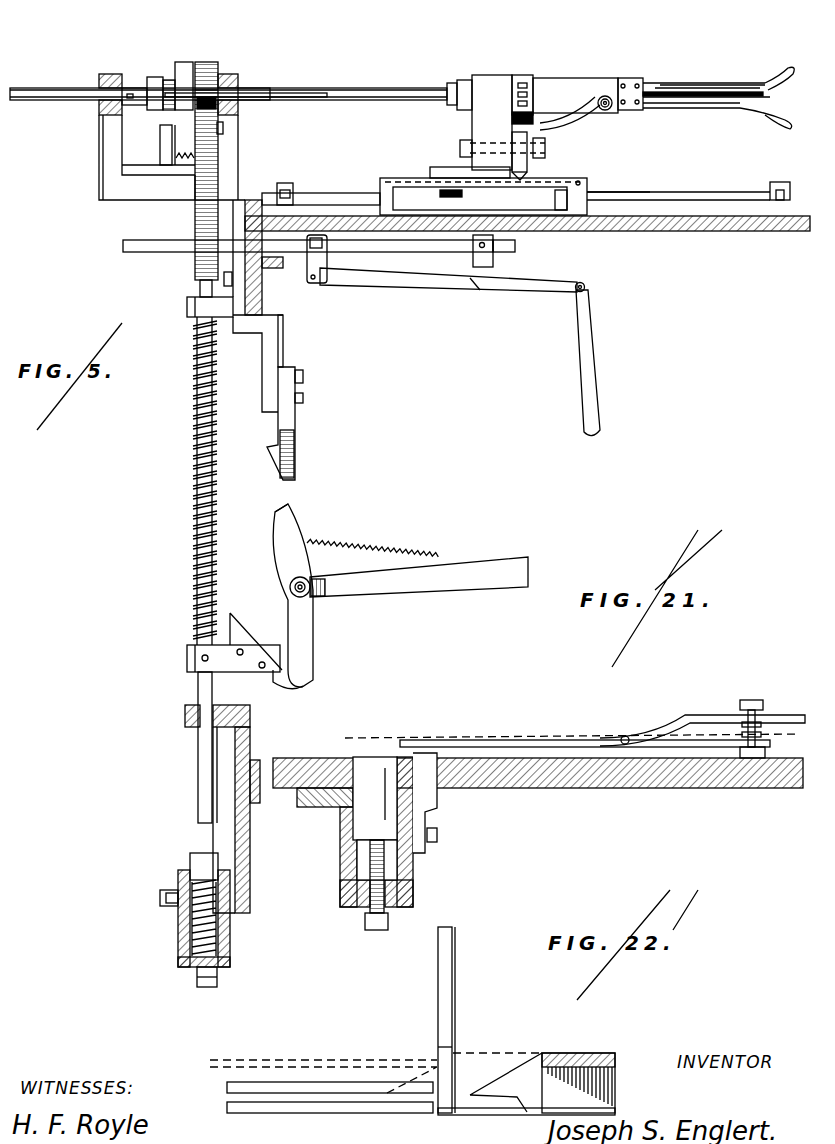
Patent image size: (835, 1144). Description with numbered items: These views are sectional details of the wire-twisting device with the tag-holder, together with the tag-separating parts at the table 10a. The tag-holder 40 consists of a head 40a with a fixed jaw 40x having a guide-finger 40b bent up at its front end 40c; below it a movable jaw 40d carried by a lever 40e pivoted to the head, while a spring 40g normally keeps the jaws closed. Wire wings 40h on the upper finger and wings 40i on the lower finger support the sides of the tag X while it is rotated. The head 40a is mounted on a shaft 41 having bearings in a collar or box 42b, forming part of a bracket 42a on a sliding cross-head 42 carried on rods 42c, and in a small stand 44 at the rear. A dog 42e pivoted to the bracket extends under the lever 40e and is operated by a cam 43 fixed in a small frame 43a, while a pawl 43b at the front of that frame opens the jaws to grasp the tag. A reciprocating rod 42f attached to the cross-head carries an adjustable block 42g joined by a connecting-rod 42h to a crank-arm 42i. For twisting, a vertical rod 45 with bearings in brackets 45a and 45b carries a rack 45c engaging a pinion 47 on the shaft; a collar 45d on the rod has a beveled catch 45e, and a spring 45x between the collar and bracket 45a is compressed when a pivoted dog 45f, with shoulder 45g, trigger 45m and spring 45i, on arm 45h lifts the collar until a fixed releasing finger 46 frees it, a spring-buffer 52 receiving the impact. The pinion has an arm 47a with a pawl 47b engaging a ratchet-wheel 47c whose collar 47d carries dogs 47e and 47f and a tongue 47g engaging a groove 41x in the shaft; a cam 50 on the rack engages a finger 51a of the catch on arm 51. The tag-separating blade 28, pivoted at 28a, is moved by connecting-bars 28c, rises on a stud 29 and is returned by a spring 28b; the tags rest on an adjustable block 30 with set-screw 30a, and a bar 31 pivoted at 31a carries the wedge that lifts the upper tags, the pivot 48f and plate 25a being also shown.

In FIG. 5, the groove 41x is at (45, 88).
In FIG. 5, the rod or shaft 41 is at (350, 88).
In FIG. 5, the bracket or small stand 44 is at (255, 86).
In FIG. 5, the finger or dog 47f is at (112, 115).
In FIG. 5, the tongue 47g is at (130, 88).
In FIG. 5, the collar 47d is at (150, 77).
In FIG. 5, the finger or dog 47e is at (167, 80).
In FIG. 5, the pawl 47b is at (183, 62).
In FIG. 5, the pinion 47 is at (208, 85).
In FIG. 5, the arm 47a is at (203, 88).
In FIG. 5, the ratchet-wheel 47c is at (166, 124).
In FIG. 5, the arm 51 is at (158, 140).
In FIG. 5, the finger 51a is at (200, 116).
In FIG. 5, the cam 50 is at (222, 148).
In FIG. 5, the bracket 42a is at (460, 80).
In FIG. 5, the collar or box 42b is at (492, 75).
In FIG. 5, the finger or dog 42e is at (545, 152).
In FIG. 5, the spring 40g is at (528, 75).
In FIG. 5, the head 40a is at (578, 78).
In FIG. 5, the lever 40e is at (576, 116).
In FIG. 5, the pivot 48f is at (607, 115).
In FIG. 5, the fixed jaw 40x is at (630, 78).
In FIG. 5, the tag-holder 40 is at (704, 79).
In FIG. 5, the guide-finger 40b is at (708, 83).
In FIG. 5, the wire wings or side pieces 40h is at (732, 83).
In FIG. 5, the bent-up front end 40c is at (778, 68).
In FIG. 5, the movable jaw 40d is at (647, 110).
In FIG. 5, the wings 40i is at (695, 108).
In FIG. 5, the small frame 43a is at (425, 178).
In FIG. 5, the cam 43 is at (436, 178).
In FIG. 5, the pawl or pivot-cam 43b is at (585, 178).
In FIG. 5, the rods 42c is at (330, 193).
In FIG. 5, the table 10a is at (665, 233).
In FIG. 5, the rack 45c is at (195, 220).
In FIG. 5, the sliding cross-head 42 is at (493, 260).
In FIG. 5, the adjustable block 42g is at (340, 275).
In FIG. 5, the reciprocating rod 42f is at (413, 280).
In FIG. 5, the connecting-rod 42h is at (473, 288).
In FIG. 5, the crank-arm 42i is at (596, 332).
In FIG. 5, the bracket 45a is at (187, 305).
In FIG. 5, the fixed finger or releasing device 46 is at (283, 420).
In FIG. 5, the spring 45x is at (195, 518).
In FIG. 5, the pivoted dog 45f is at (315, 620).
In FIG. 5, the trigger 45m is at (290, 515).
In FIG. 5, the beveled catch or projection 45e is at (278, 625).
In FIG. 5, the arm 45h is at (478, 585).
In FIG. 5, the spring 45i is at (375, 553).
In FIG. 5, the collar or block 45d is at (187, 655).
In FIG. 5, the shoulder 45g is at (298, 686).
In FIG. 5, the vertical rod 45 is at (198, 692).
In FIG. 5, the bracket 45b is at (185, 716).
In FIG. 5, the spring-buffer 52 is at (200, 853).
In FIG. 21, the pivot 28a is at (783, 788).
In FIG. 21, the adjustable block 30 is at (370, 757).
In FIG. 21, the set-screw 30a is at (385, 860).
In FIG. 21, the stud 29 is at (474, 757).
In FIG. 21, the second blade 28 is at (520, 740).
In FIG. 21, the connecting-bars 28c is at (690, 715).
In FIG. 21, the spring 28b is at (765, 715).
In FIG. 22, the plate 25a is at (455, 945).
In FIG. 22, the bar 31 is at (598, 1053).
In FIG. 22, the pivot 31a is at (516, 1068).
In FIG. 22, the tag X is at (292, 1082).